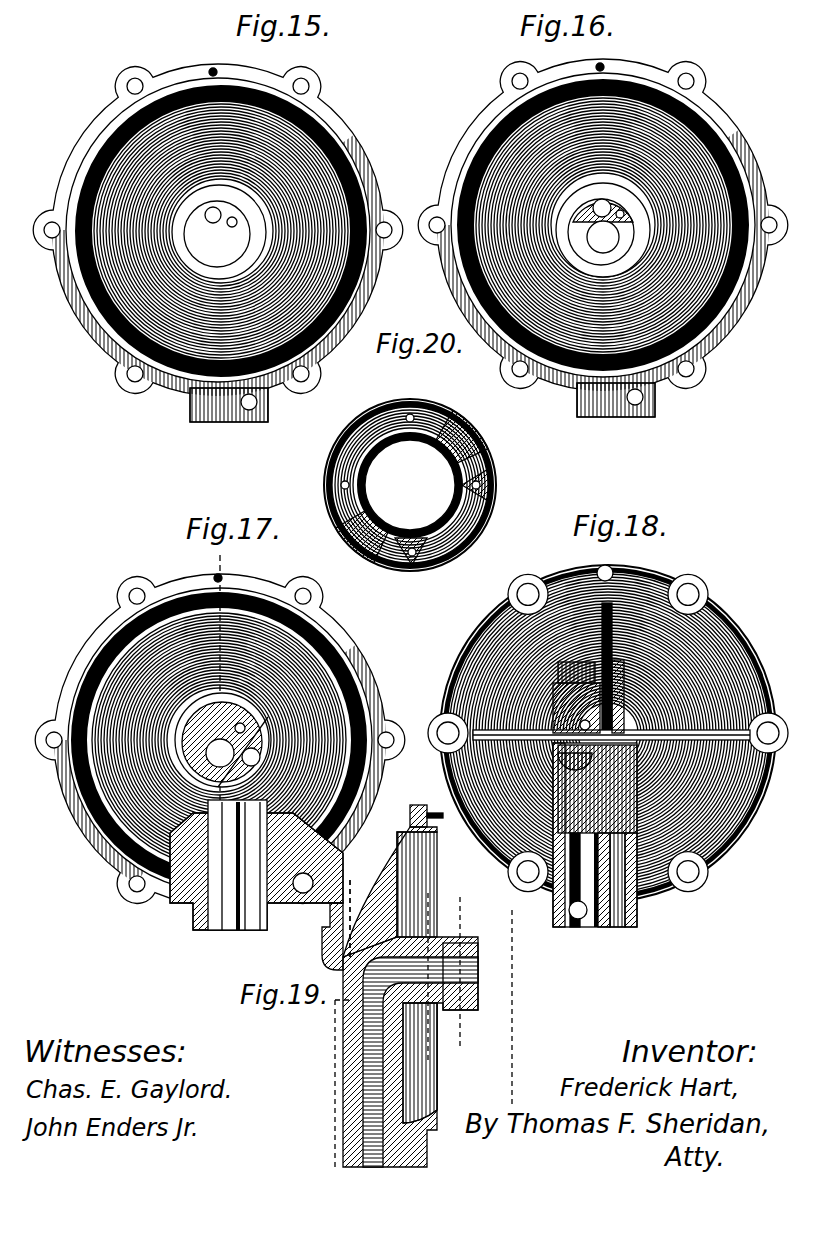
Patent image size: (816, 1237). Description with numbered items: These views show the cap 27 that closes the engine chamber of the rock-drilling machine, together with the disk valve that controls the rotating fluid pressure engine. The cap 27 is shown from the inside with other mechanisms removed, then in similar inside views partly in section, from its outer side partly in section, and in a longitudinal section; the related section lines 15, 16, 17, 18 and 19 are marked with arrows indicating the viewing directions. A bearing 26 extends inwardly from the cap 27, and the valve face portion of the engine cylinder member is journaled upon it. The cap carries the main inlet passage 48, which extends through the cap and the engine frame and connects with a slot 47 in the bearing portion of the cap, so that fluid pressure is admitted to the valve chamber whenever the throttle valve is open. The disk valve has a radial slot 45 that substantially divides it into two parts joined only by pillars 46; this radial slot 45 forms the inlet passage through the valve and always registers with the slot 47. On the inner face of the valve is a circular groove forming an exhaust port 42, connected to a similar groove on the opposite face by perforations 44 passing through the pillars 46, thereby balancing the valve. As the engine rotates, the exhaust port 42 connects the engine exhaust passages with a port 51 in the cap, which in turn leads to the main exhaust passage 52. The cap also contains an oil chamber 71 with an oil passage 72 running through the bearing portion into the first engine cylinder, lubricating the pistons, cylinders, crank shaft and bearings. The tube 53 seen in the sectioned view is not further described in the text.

In FIG. 19, the section line 15 is at (487, 920).
In FIG. 19, the section line 16 is at (440, 895).
In FIG. 19, the section line 17 is at (403, 903).
In FIG. 17, the section line 18 is at (344, 907).
In FIG. 17, the section line 19 is at (212, 949).
In FIG. 15, the bearing 26 is at (219, 232).
In FIG. 19, the bearing 26 is at (470, 1001).
In FIG. 15, the cap 27 is at (218, 243).
In FIG. 16, the cap 27 is at (603, 238).
In FIG. 17, the cap 27 is at (220, 740).
In FIG. 18, the cap 27 is at (608, 733).
In FIG. 19, the cap 27 is at (403, 830).
In FIG. 20, the exhaust port 42 is at (365, 474).
In FIG. 20, the perforations 44 is at (402, 476).
In FIG. 20, the radial slot 45 is at (426, 485).
In FIG. 18, the radial slot 45 is at (555, 810).
In FIG. 20, the pillars 46 is at (469, 538).
In FIG. 17, the slot 47 is at (249, 740).
In FIG. 19, the slot 47 is at (438, 1033).
In FIG. 18, the main inlet passage 48 is at (579, 932).
In FIG. 16, the port 51 is at (610, 240).
In FIG. 19, the port 51 is at (461, 1004).
In FIG. 17, the main exhaust passage 52 is at (256, 871).
In FIG. 18, the main exhaust passage 52 is at (623, 838).
In FIG. 19, the main exhaust passage 52 is at (357, 1084).
In FIG. 17, the tube 53 is at (256, 865).
In FIG. 18, the oil chamber 71 is at (562, 696).
In FIG. 15, the oil passage 72 is at (263, 214).
In FIG. 16, the oil passage 72 is at (656, 207).
In FIG. 17, the oil passage 72 is at (275, 731).
In FIG. 18, the oil passage 72 is at (611, 671).